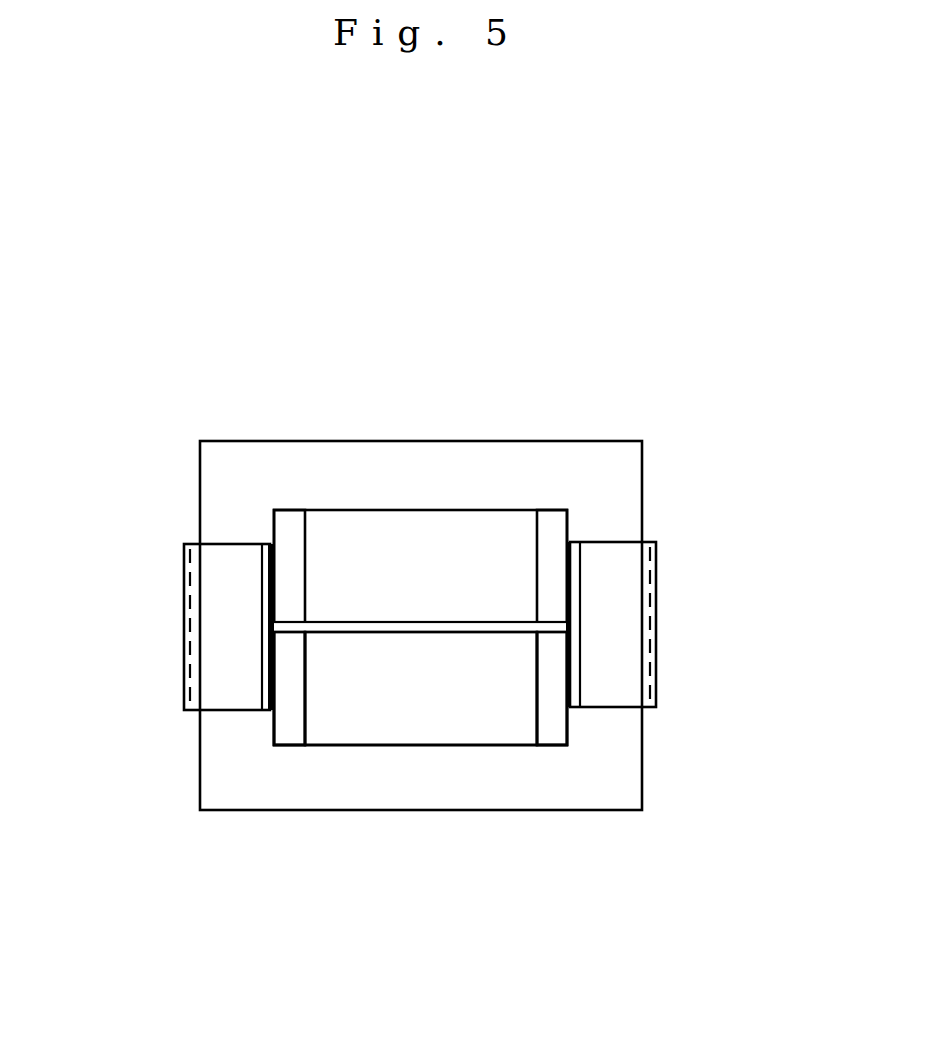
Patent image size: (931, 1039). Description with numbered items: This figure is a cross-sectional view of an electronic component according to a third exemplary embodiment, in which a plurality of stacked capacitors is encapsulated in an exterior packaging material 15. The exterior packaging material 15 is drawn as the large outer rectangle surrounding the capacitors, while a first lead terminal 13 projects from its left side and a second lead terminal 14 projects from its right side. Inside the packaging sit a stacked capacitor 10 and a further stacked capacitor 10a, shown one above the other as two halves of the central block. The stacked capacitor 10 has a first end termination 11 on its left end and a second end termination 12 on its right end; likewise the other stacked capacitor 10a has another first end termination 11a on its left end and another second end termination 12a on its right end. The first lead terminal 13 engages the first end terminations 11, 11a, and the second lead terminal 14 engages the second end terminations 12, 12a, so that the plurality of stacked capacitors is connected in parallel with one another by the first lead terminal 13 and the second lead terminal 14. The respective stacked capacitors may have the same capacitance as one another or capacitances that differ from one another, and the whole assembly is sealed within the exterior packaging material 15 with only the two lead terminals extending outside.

The stacked capacitor 10 is at (453, 515).
The stacked capacitor 10a is at (455, 725).
The first end termination 11 is at (291, 535).
The first end termination 11a is at (293, 723).
The second end termination 12 is at (550, 543).
The second end termination 12a is at (555, 722).
The first lead terminal 13 is at (218, 558).
The second lead terminal 14 is at (623, 553).
The exterior packaging material 15 is at (393, 438).